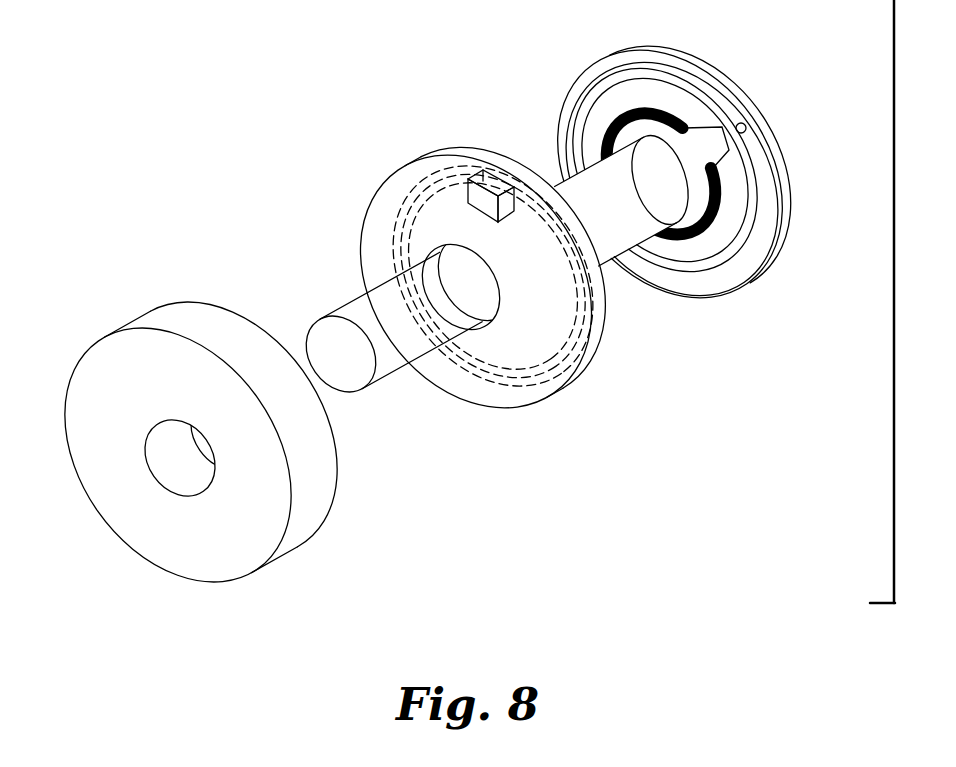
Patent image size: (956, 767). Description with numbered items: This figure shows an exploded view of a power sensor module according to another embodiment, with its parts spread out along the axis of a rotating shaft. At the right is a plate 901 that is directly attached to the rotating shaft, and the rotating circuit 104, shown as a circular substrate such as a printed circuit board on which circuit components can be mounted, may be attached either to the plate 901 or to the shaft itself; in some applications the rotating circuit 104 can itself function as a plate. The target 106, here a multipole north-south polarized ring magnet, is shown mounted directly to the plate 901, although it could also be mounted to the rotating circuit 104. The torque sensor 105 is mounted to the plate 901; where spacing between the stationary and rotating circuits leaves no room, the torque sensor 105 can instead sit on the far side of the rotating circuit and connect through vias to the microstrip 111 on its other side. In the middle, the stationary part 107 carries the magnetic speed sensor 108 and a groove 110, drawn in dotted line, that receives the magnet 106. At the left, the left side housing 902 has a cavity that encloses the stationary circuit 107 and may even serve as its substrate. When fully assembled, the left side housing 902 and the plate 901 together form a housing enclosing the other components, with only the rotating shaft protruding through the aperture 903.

The rotating circuit 104 is at (757, 198).
The torque sensor 105 is at (745, 126).
The target 106 is at (574, 108).
The stationary part 107 is at (500, 392).
The magnetic speed sensor 108 is at (492, 170).
The groove 110 is at (399, 204).
The microstrip 111 is at (683, 240).
The plate 901 is at (735, 280).
The left side housing 902 is at (208, 325).
The aperture 903 is at (166, 462).